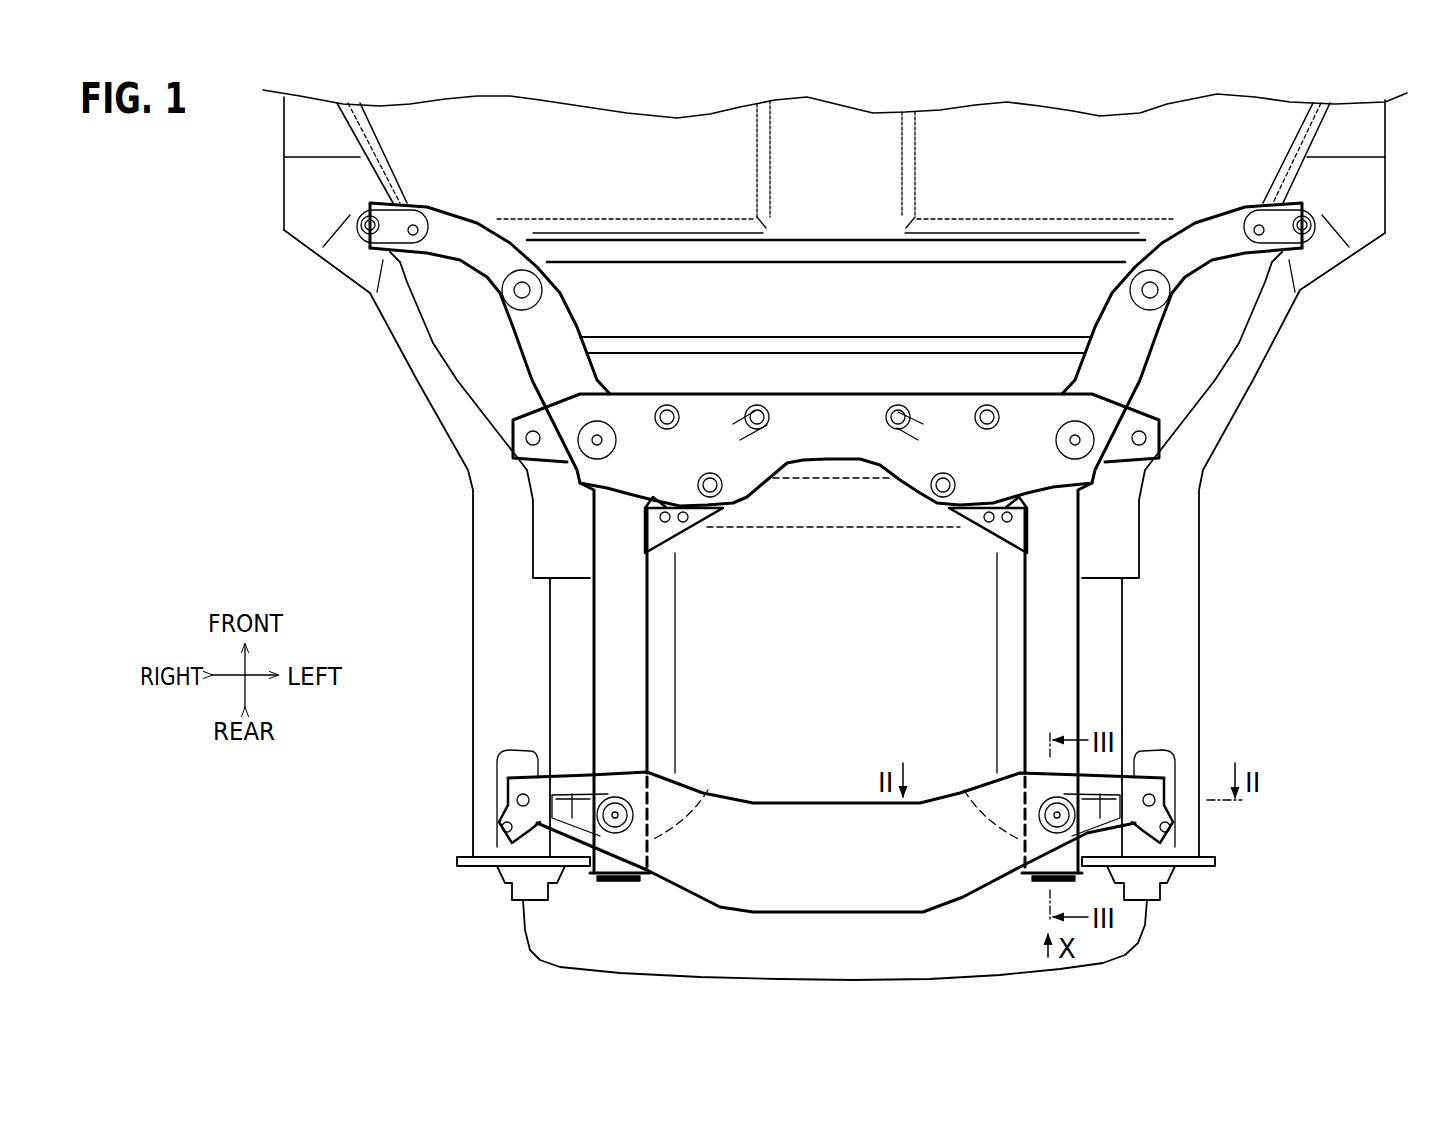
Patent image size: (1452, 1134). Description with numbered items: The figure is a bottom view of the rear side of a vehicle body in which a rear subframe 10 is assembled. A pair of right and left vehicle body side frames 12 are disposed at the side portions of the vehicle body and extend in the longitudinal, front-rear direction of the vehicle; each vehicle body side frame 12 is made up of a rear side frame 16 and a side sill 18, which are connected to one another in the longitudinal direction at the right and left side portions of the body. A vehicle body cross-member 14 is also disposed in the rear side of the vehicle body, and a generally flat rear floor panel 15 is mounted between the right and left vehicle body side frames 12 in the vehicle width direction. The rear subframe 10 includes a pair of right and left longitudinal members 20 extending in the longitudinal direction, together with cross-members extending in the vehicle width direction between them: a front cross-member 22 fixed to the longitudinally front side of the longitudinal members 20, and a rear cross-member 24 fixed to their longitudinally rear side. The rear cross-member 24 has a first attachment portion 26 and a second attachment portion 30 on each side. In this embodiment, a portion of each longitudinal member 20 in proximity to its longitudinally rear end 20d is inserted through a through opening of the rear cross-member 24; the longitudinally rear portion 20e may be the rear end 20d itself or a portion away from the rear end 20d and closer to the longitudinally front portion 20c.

The rear subframe 10 is at (838, 390).
The vehicle body side frame 12 is at (462, 583).
The vehicle body cross-member 14 is at (833, 230).
The rear floor panel 15 is at (867, 177).
The rear side frame 16 is at (497, 655).
The side sill 18 is at (298, 130).
The longitudinal member 20 is at (656, 660).
The longitudinally front portion 20c is at (370, 202).
The longitudinally rear end 20d is at (623, 882).
The longitudinally rear portion 20e is at (707, 790).
The front cross-member 22 is at (836, 468).
The rear cross-member 24 is at (846, 797).
The first attachment portion 26 is at (575, 849).
The second attachment portion 30 is at (521, 783).